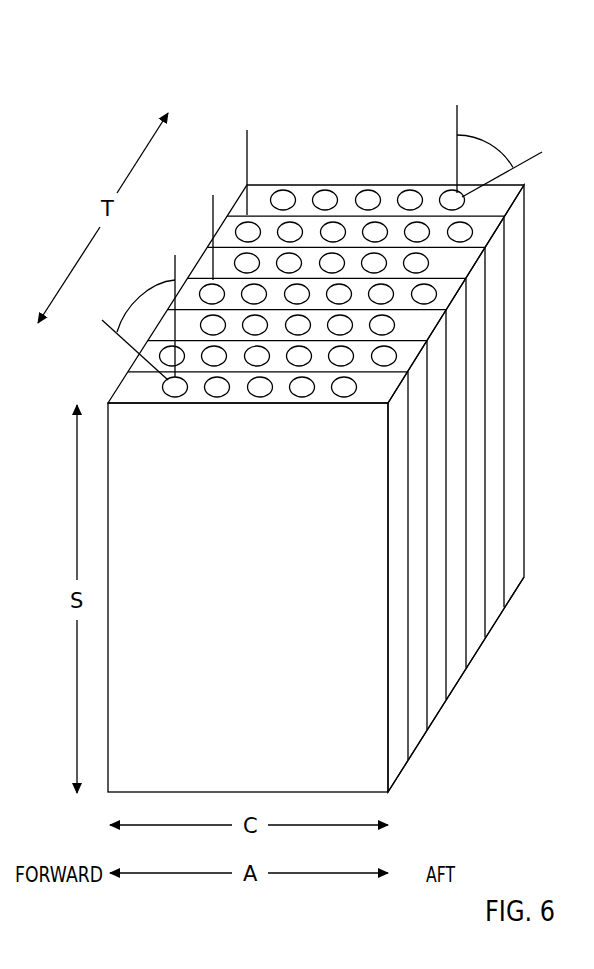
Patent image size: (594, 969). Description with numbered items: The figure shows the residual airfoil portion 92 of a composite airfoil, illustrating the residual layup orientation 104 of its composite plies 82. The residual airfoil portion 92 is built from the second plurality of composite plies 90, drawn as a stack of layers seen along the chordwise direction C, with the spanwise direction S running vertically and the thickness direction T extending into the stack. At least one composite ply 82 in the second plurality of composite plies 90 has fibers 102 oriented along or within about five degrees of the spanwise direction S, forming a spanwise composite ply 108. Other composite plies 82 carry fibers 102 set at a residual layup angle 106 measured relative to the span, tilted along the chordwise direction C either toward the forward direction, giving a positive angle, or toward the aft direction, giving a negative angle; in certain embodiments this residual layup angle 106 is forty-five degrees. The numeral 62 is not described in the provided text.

The combustor component 62 is at (90, 98).
The residual airfoil portion 92 is at (138, 98).
The residual layup orientation 104 is at (260, 104).
The residual layup angle 106 is at (133, 298).
The spanwise composite ply 108 is at (243, 198).
The fibers 102 is at (215, 396).
The composite ply 82 is at (420, 722).
The second plurality of composite plies 90 is at (519, 710).